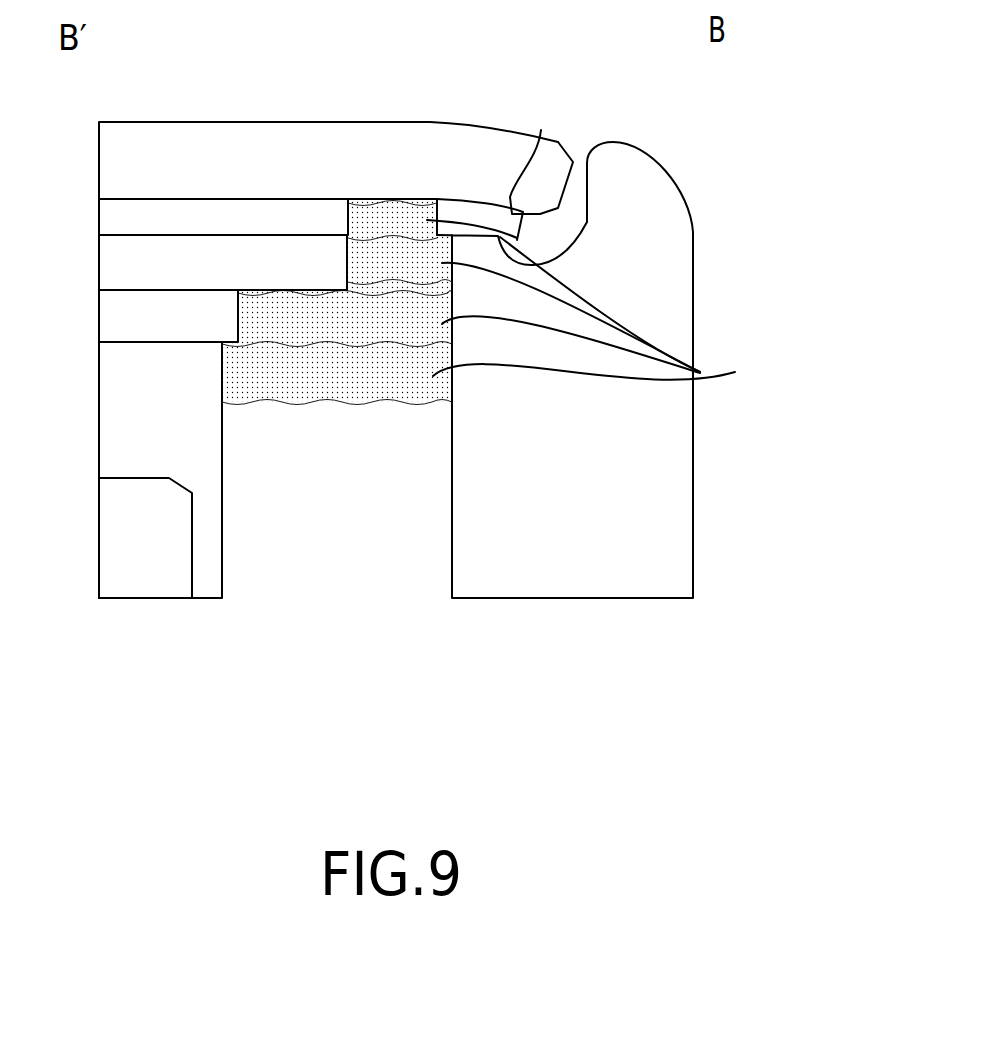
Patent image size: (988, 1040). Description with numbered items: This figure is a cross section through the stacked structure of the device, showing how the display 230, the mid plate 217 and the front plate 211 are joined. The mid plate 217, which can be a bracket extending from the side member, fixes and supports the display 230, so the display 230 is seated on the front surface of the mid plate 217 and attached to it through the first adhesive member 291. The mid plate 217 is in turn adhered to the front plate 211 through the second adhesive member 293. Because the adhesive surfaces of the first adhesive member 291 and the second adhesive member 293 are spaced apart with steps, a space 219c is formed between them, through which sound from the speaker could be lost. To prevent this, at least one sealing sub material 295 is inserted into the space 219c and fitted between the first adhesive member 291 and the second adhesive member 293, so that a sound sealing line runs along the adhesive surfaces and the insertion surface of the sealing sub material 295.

The front plate 211 is at (221, 127).
The mid plate 217 is at (560, 543).
The space 219c is at (356, 550).
The display 230 is at (108, 213).
The first adhesive member 291 is at (108, 315).
The second adhesive member 293 is at (541, 130).
The sealing sub material 295 is at (604, 309).